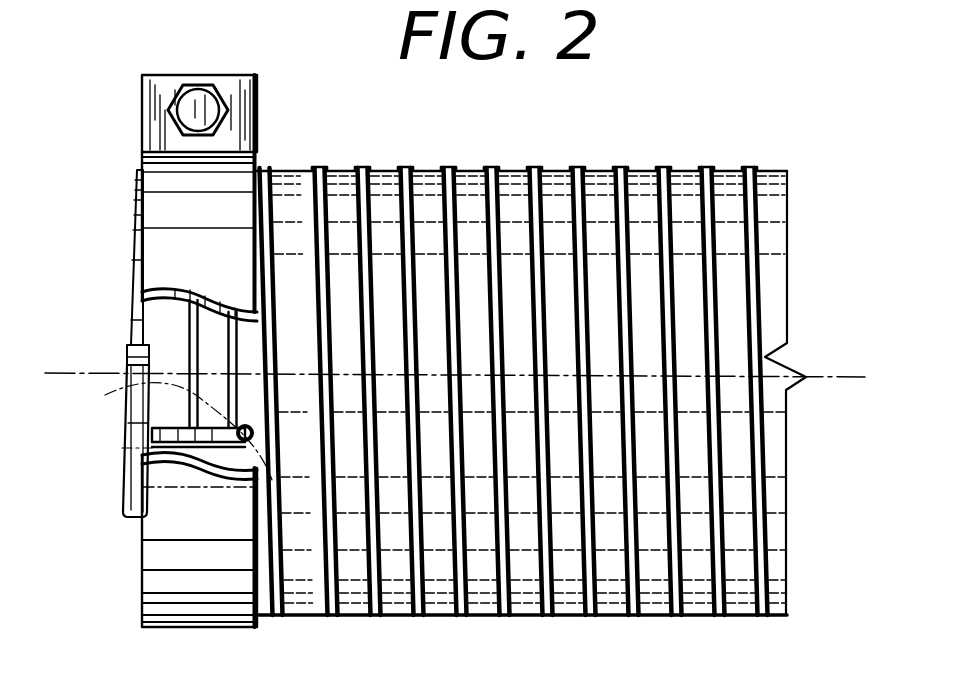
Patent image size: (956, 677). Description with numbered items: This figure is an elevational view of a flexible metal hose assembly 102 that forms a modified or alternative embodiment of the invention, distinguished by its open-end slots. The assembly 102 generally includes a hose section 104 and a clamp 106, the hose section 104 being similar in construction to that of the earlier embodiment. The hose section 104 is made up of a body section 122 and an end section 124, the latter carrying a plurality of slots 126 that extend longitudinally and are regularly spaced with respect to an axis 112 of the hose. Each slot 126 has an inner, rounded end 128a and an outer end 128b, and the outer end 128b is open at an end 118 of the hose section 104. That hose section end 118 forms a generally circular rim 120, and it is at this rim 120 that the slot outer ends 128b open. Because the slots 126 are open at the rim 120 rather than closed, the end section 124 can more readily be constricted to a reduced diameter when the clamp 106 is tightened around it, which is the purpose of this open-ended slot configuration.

The flexible metal hose assembly 102 is at (737, 132).
The hose section 104 is at (787, 172).
The clamp 106 is at (255, 76).
The axis 112 is at (813, 377).
The end of the hose section 118 is at (136, 275).
The circular rim 120 is at (133, 233).
The body section 122 is at (787, 615).
The end section 124 is at (138, 170).
The slots 126 is at (130, 388).
The inner rounded end 128a is at (255, 504).
The outer end 128b is at (157, 432).